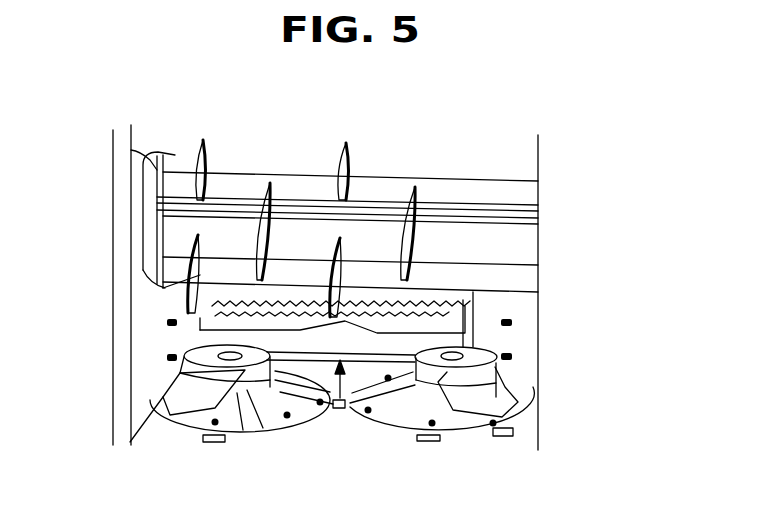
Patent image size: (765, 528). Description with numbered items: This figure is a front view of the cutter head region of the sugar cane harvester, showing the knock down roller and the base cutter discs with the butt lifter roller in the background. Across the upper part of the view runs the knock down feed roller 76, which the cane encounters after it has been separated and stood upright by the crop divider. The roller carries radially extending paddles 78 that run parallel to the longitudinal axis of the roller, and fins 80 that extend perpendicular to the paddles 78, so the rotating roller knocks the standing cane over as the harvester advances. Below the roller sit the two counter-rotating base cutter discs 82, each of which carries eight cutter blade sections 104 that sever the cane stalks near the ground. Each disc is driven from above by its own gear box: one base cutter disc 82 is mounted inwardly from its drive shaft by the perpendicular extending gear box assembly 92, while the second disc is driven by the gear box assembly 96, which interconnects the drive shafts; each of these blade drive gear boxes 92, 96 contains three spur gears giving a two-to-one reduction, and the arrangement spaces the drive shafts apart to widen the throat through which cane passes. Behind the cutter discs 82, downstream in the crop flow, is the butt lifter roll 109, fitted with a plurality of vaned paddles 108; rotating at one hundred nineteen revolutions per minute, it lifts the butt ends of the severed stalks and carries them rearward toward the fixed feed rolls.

The knock down feed roller 76 is at (440, 200).
The radially extending paddles 78 is at (240, 183).
The fins 80 is at (198, 148).
The base cutter disc 82 is at (307, 427).
The gear box assembly 92 is at (497, 366).
The gear box assembly 96 is at (212, 362).
The cutter blade sections 104 is at (300, 427).
The vaned paddles 108 is at (353, 335).
The butt lifter roll 109 is at (347, 407).